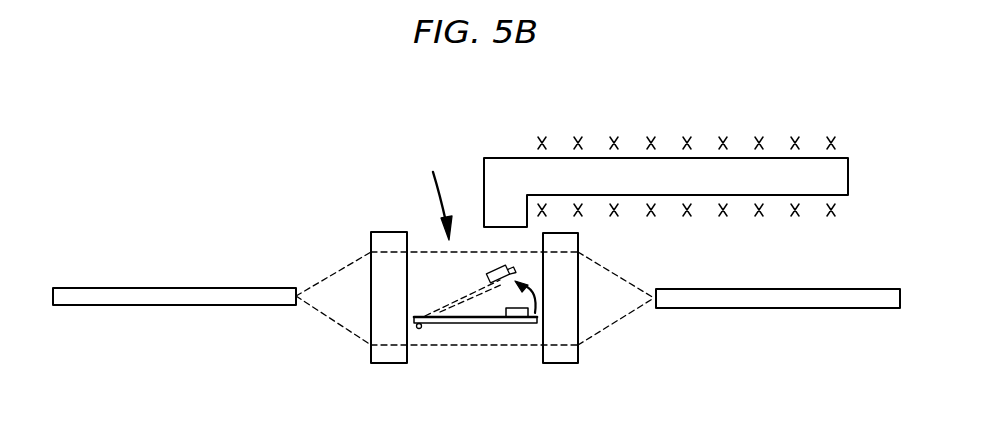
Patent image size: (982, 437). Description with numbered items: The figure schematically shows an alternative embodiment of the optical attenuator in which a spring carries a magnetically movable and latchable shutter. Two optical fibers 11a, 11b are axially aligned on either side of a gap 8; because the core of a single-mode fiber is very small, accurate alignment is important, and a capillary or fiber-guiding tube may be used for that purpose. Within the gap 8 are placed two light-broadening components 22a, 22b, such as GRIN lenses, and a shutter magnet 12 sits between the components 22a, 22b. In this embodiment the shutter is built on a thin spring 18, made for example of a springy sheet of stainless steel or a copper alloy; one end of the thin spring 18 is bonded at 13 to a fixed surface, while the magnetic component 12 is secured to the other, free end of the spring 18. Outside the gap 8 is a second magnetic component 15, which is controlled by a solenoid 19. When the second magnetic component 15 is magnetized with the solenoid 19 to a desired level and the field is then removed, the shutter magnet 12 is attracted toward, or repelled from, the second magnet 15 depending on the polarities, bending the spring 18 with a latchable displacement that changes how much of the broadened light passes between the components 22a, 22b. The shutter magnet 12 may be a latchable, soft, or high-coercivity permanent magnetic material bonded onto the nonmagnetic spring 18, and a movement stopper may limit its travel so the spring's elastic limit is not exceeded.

The gap 8 is at (437, 194).
The optical fiber 11a is at (783, 308).
The optical fiber 11b is at (152, 288).
The shutter magnet 12 is at (515, 324).
The bonding point 13 is at (420, 328).
The second magnetic component 15 is at (672, 158).
The thin spring 18 is at (473, 324).
The solenoid 19 is at (722, 222).
The light-broadening component 22a is at (389, 232).
The light-broadening component 22b is at (560, 363).